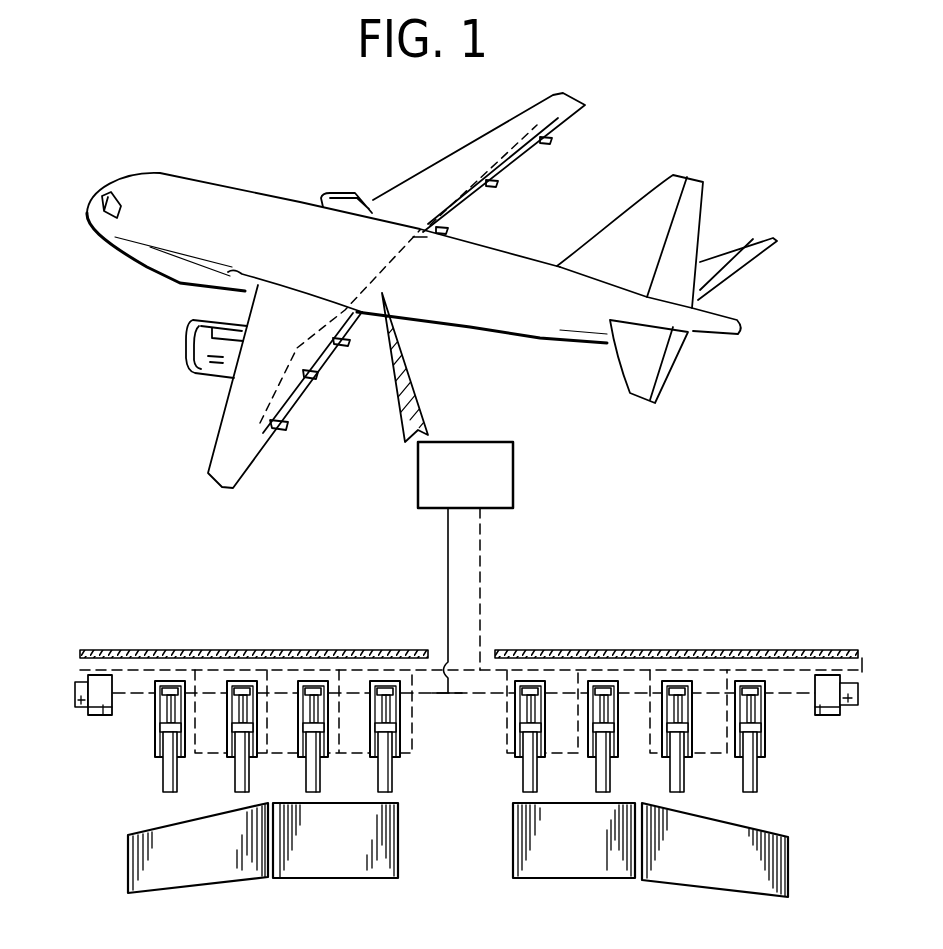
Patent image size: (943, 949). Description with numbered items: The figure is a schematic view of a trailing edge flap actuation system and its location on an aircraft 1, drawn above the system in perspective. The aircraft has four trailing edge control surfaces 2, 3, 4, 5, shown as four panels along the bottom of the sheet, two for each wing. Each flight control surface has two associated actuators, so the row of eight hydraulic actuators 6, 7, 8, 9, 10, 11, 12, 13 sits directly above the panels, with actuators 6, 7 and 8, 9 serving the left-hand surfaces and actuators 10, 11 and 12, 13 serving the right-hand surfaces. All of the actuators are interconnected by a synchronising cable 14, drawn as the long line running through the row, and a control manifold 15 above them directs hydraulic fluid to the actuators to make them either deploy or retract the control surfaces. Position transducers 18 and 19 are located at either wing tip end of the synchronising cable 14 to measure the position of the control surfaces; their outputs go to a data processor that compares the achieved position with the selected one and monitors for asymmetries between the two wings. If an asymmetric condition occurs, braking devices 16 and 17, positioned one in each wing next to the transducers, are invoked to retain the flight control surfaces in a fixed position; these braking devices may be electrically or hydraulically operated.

The aircraft 1 is at (176, 235).
The trailing edge control surface 2 is at (203, 872).
The trailing edge control surface 3 is at (335, 865).
The trailing edge control surface 4 is at (585, 857).
The trailing edge control surface 5 is at (718, 867).
The actuator 6 is at (167, 777).
The actuator 7 is at (236, 774).
The actuator 8 is at (308, 774).
The actuator 9 is at (380, 774).
The actuator 10 is at (519, 780).
The actuator 11 is at (600, 773).
The actuator 12 is at (674, 773).
The actuator 13 is at (747, 773).
The synchronising cable 14 is at (483, 693).
The control manifold 15 is at (498, 472).
The braking device 16 is at (103, 716).
The braking device 17 is at (827, 700).
The position transducer 18 is at (82, 704).
The position transducer 19 is at (853, 700).